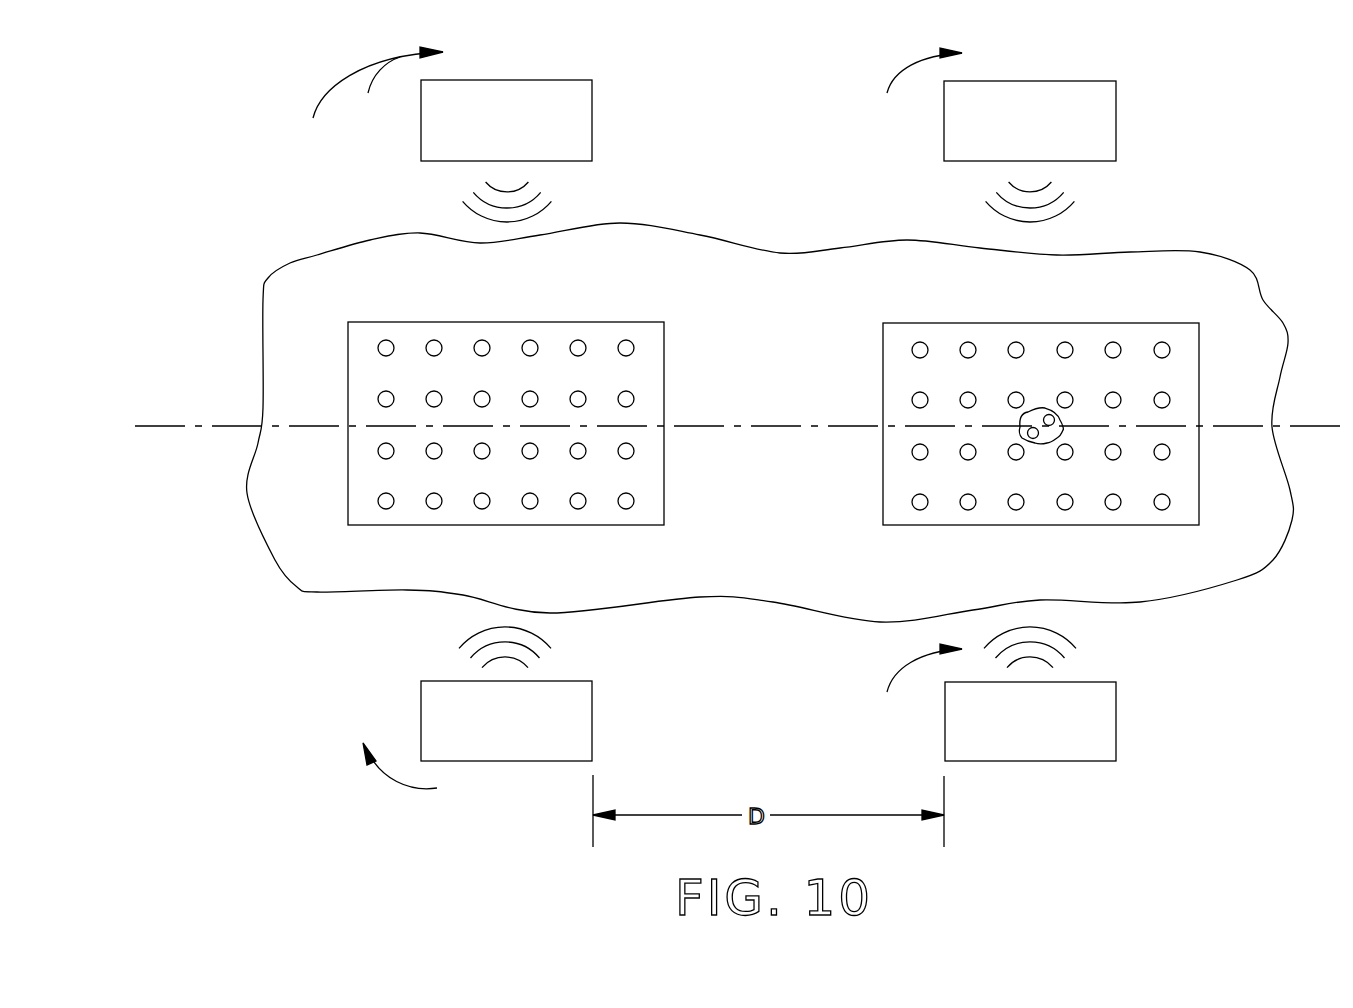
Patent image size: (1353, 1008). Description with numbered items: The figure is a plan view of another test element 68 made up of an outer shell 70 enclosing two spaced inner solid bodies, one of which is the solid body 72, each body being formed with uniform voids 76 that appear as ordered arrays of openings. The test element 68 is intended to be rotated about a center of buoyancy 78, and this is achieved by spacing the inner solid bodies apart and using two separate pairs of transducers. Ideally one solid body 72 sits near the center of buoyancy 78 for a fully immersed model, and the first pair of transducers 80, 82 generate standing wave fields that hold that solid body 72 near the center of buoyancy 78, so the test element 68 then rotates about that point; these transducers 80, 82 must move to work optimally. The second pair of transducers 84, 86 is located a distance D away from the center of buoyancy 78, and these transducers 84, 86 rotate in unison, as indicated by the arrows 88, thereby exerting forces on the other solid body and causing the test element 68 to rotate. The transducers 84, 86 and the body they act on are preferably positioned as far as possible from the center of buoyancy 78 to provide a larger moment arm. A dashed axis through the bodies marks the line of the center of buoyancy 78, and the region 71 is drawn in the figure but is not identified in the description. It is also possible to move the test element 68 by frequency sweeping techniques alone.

The test element 68 is at (749, 430).
The outer shell 70 is at (1278, 342).
The first perforated zone 71 is at (353, 323).
The inner solid body 72 is at (1190, 513).
The uniform voids 76 is at (578, 340).
The center of buoyancy 78 is at (1062, 428).
The transducer 80 is at (1023, 80).
The transducer 82 is at (1088, 682).
The transducer 84 is at (540, 80).
The transducer 86 is at (557, 680).
The arrows 88 is at (343, 843).